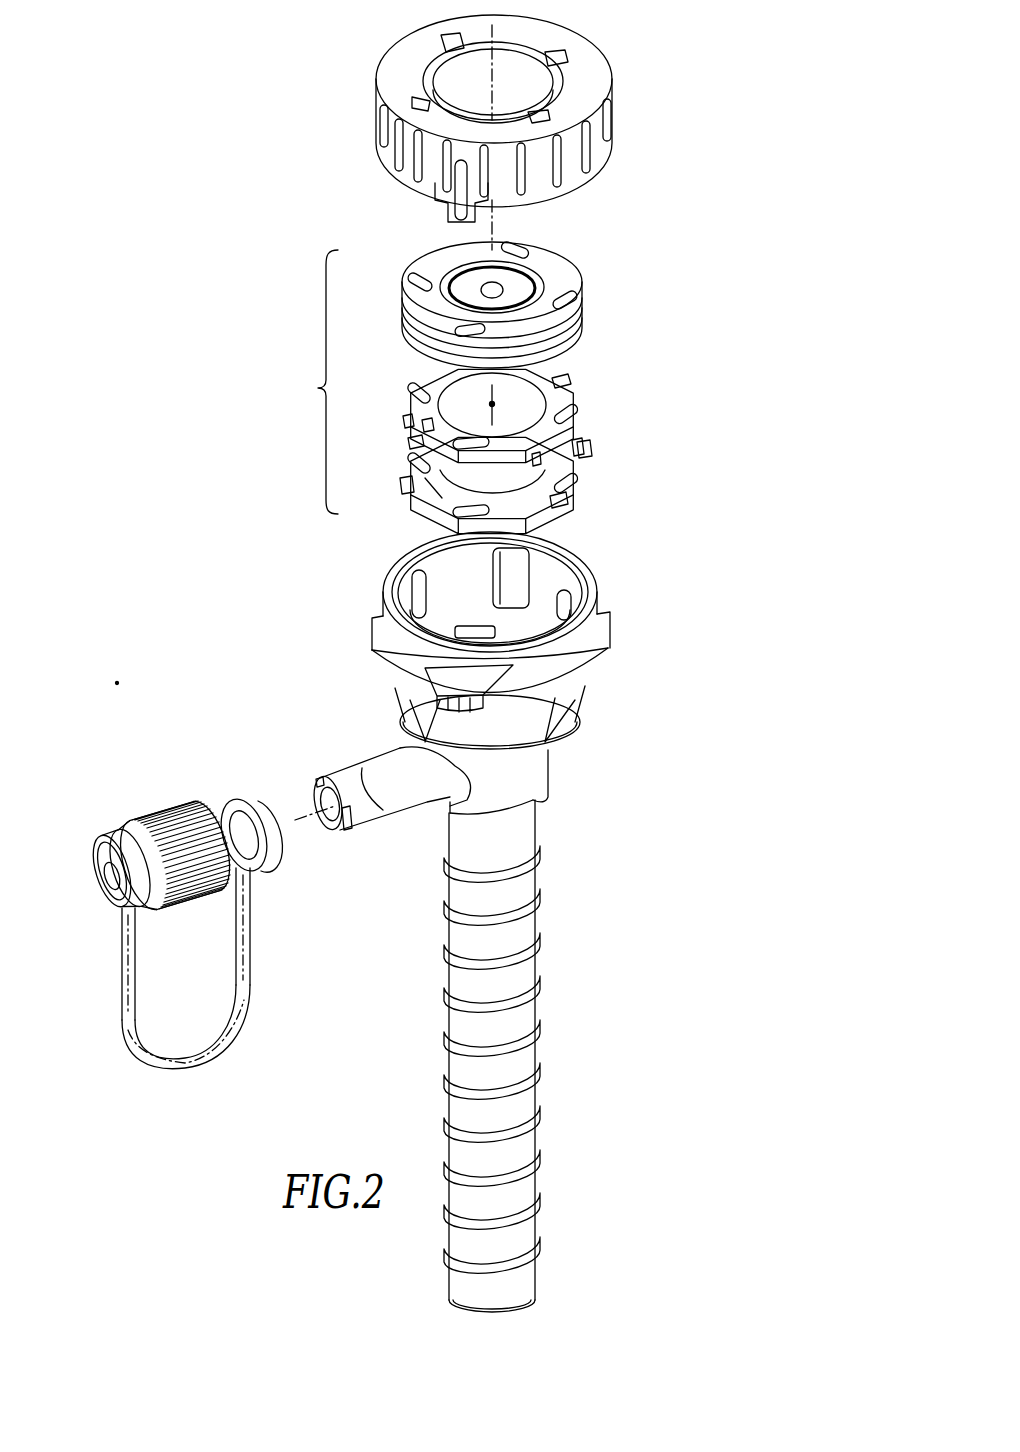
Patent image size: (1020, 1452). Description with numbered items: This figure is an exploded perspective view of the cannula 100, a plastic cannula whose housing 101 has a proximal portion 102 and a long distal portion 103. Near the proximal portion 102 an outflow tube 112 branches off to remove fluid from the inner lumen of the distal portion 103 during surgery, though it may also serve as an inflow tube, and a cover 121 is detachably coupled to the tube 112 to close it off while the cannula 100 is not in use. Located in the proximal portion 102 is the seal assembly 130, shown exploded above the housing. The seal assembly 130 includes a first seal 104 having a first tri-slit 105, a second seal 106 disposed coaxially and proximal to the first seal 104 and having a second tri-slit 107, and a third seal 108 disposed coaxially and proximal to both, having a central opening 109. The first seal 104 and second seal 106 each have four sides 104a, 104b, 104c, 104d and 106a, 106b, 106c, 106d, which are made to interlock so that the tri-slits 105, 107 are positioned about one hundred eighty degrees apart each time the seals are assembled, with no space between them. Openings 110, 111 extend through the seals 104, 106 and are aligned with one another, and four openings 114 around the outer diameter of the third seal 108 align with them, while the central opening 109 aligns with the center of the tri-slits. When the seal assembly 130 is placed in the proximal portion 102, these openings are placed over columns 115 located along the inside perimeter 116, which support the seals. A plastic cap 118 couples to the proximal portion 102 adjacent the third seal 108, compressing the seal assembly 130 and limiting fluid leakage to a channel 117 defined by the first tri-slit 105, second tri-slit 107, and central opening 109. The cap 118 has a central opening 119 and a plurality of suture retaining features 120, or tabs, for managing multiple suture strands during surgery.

The cannula 100 is at (663, 540).
The housing 101 is at (540, 878).
The proximal portion 102 is at (570, 562).
The distal portion 103 is at (538, 1088).
The first seal 104 is at (576, 480).
The side of first seal 104a is at (406, 482).
The side of first seal 104b is at (584, 448).
The side of first seal 104c is at (415, 445).
The side of first seal 104d is at (556, 500).
The first tri-slit 105 is at (442, 488).
The second seal 106 is at (575, 414).
The side of second seal 106a is at (422, 372).
The side of second seal 106b is at (537, 462).
The side of second seal 106c is at (408, 418).
The side of second seal 106d is at (563, 392).
The second tri-slit 107 is at (493, 404).
The third seal 108 is at (582, 296).
The central opening 109 is at (505, 290).
The opening 110 is at (578, 463).
The opening 111 is at (416, 395).
The outflow tube 112 is at (367, 822).
The openings 114 is at (515, 250).
The columns 115 is at (583, 600).
The inside perimeter 116 is at (452, 605).
The channel 117 is at (488, 235).
The cap 118 is at (600, 88).
The central opening 119 is at (548, 88).
The suture retaining features 120 is at (448, 205).
The cover 121 is at (98, 863).
The seal assembly 130 is at (310, 382).